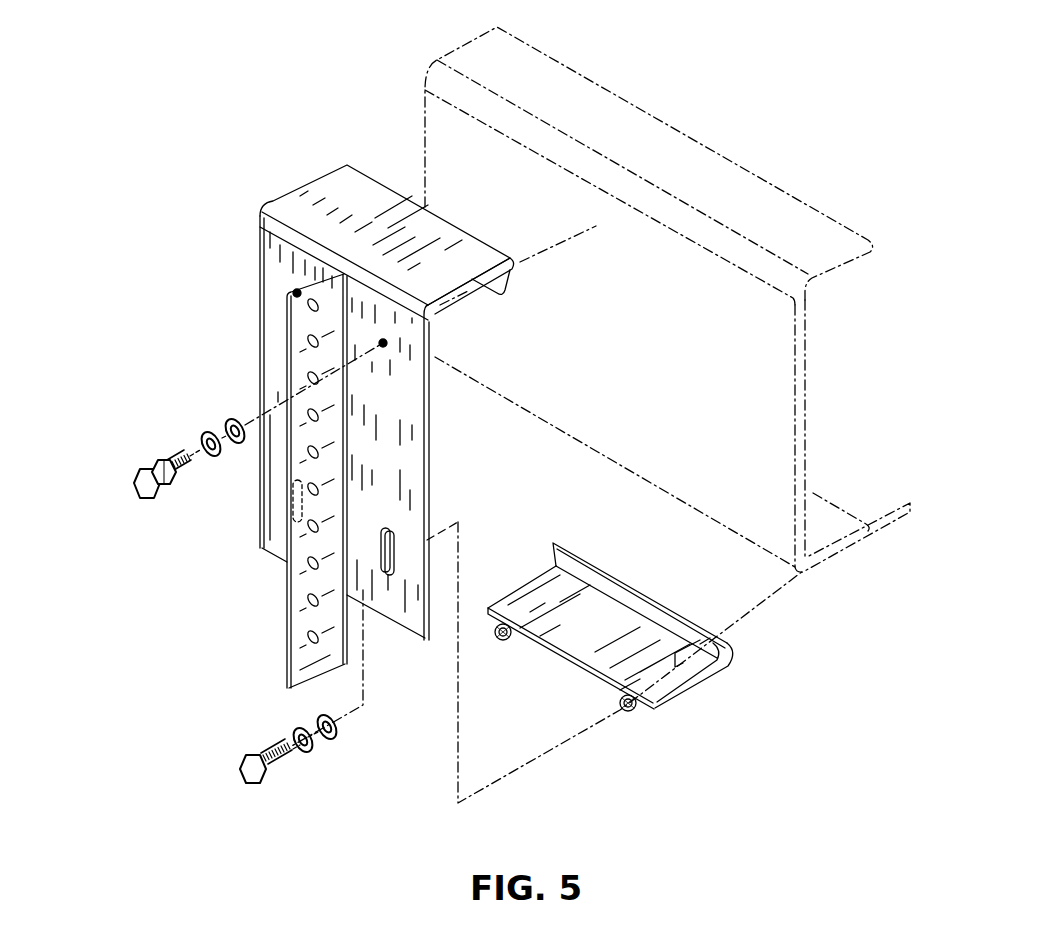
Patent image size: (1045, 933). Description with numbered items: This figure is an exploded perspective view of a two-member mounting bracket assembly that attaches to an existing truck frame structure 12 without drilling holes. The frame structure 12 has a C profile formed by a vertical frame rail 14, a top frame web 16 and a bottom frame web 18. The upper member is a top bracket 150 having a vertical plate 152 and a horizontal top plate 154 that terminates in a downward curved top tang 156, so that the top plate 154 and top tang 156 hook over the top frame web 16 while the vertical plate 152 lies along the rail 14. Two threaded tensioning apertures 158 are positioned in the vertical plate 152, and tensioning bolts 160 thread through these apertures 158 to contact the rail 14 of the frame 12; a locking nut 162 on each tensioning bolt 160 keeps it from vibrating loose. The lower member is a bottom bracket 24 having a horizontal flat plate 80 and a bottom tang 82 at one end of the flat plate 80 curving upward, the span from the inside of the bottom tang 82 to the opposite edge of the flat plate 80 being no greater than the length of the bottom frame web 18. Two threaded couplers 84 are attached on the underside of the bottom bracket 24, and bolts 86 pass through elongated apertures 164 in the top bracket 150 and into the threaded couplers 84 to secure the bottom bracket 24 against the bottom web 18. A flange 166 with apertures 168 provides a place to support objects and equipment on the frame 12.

The truck frame structure 12 is at (601, 415).
The vertical frame rail 14 is at (807, 383).
The top frame web 16 is at (824, 278).
The bottom frame web 18 is at (832, 518).
The bottom bracket 24 is at (634, 566).
The flat plate 80 is at (644, 649).
The bottom tang 82 is at (736, 645).
The threaded couplers 84 is at (633, 713).
The bolts 86 is at (256, 786).
The top bracket 150 is at (158, 115).
The vertical plate 152 is at (410, 451).
The horizontal top plate 154 is at (372, 207).
The top tang 156 is at (515, 258).
The threaded tensioning apertures 158 is at (295, 290).
The tensioning bolts 160 is at (136, 478).
The locking nut 162 is at (165, 458).
The elongated apertures 164 is at (390, 535).
The flange 166 is at (304, 688).
The apertures 168 is at (312, 645).